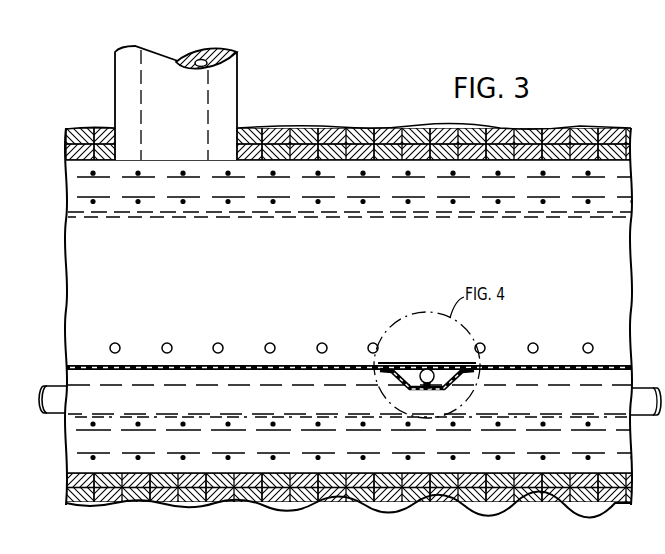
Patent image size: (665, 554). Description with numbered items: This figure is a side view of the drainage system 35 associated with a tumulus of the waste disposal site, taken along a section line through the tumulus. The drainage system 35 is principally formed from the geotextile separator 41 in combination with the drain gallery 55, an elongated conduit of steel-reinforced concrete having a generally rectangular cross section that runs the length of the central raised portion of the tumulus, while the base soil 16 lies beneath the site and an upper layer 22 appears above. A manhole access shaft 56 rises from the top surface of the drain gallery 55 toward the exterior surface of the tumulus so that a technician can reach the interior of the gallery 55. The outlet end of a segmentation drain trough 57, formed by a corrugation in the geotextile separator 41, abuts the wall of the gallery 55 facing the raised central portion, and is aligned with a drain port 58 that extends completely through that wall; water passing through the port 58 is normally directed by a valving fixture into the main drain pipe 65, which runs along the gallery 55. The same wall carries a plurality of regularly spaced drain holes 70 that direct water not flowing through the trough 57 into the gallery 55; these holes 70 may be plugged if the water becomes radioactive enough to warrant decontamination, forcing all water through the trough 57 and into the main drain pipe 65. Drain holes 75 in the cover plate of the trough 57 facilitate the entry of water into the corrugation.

The base soil 16 is at (66, 490).
The outer wall panel 22 is at (342, 131).
The drainage system 35 is at (181, 81).
The geotextile separator 41 is at (557, 365).
The drain gallery 55 is at (328, 288).
The manhole access shaft 56 is at (222, 90).
The segmentation drain trough 57 is at (440, 370).
The drain port 58 is at (426, 369).
The main drain pipe 65 is at (50, 390).
The drain holes 70 is at (218, 343).
The drain holes 75 is at (72, 548).